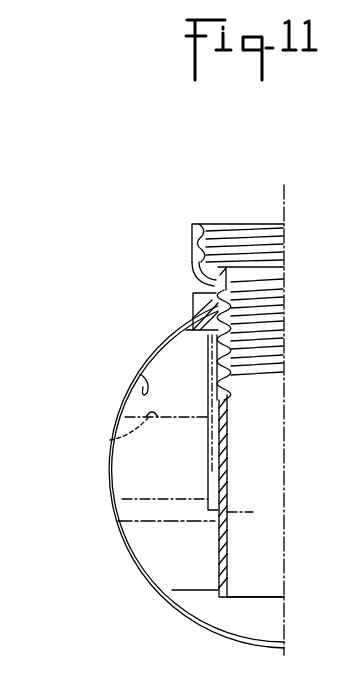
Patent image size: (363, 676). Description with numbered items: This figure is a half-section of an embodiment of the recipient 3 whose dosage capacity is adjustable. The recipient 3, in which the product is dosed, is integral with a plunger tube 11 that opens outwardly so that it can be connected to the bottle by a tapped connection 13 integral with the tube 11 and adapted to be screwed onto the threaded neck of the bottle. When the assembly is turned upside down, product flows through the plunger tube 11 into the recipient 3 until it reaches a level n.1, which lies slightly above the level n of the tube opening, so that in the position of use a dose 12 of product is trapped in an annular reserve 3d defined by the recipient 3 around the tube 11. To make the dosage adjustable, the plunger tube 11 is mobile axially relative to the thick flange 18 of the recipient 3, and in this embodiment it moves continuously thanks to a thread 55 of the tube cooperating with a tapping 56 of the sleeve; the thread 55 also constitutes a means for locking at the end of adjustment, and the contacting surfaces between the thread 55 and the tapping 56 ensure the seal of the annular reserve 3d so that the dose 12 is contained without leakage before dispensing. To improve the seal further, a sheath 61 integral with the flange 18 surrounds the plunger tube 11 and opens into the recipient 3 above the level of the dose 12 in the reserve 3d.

The recipient 3 is at (106, 491).
The annular reserve 3d is at (140, 375).
The plunger tube 11 is at (222, 440).
The dose 12 is at (110, 443).
The tapped connection 13 is at (195, 240).
The thick flange 18 is at (195, 303).
The thread 55 is at (219, 356).
The tapping 56 is at (192, 316).
The sheath 61 is at (210, 402).
The level n.1 is at (192, 582).
The level n is at (272, 598).